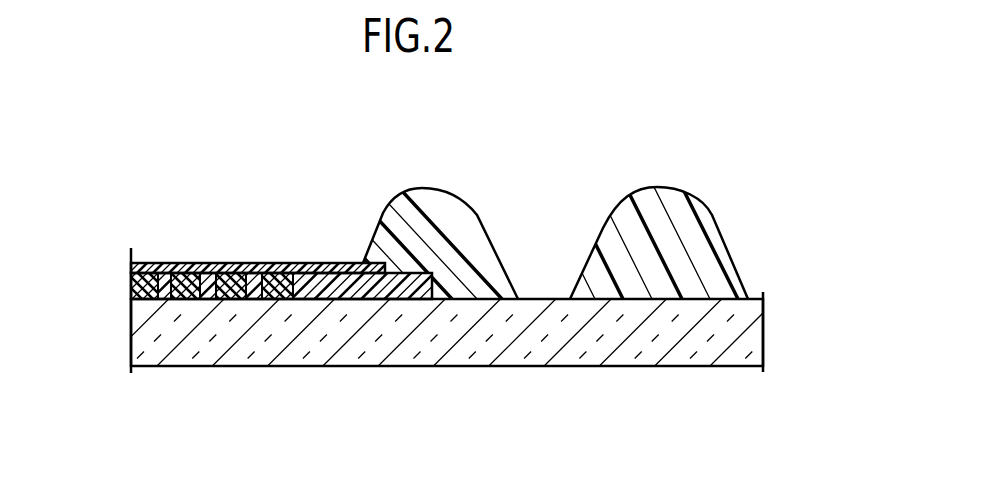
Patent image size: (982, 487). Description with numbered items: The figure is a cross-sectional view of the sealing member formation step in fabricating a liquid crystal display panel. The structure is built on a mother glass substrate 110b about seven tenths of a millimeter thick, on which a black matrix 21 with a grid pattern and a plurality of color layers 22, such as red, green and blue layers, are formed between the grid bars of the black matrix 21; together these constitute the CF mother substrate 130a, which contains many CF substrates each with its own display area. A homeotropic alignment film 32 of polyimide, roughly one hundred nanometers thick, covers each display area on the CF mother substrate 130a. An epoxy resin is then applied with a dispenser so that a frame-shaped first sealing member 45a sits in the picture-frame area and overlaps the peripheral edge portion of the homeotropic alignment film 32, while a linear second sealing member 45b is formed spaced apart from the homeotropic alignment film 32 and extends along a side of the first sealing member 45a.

The mother glass substrate 110b is at (750, 333).
The CF mother substrate 130a is at (450, 273).
The black matrix 21 is at (321, 282).
The color layers 22 is at (214, 236).
The homeotropic alignment film 32 is at (243, 270).
The first sealing member 45a is at (448, 201).
The second sealing member 45b is at (675, 197).